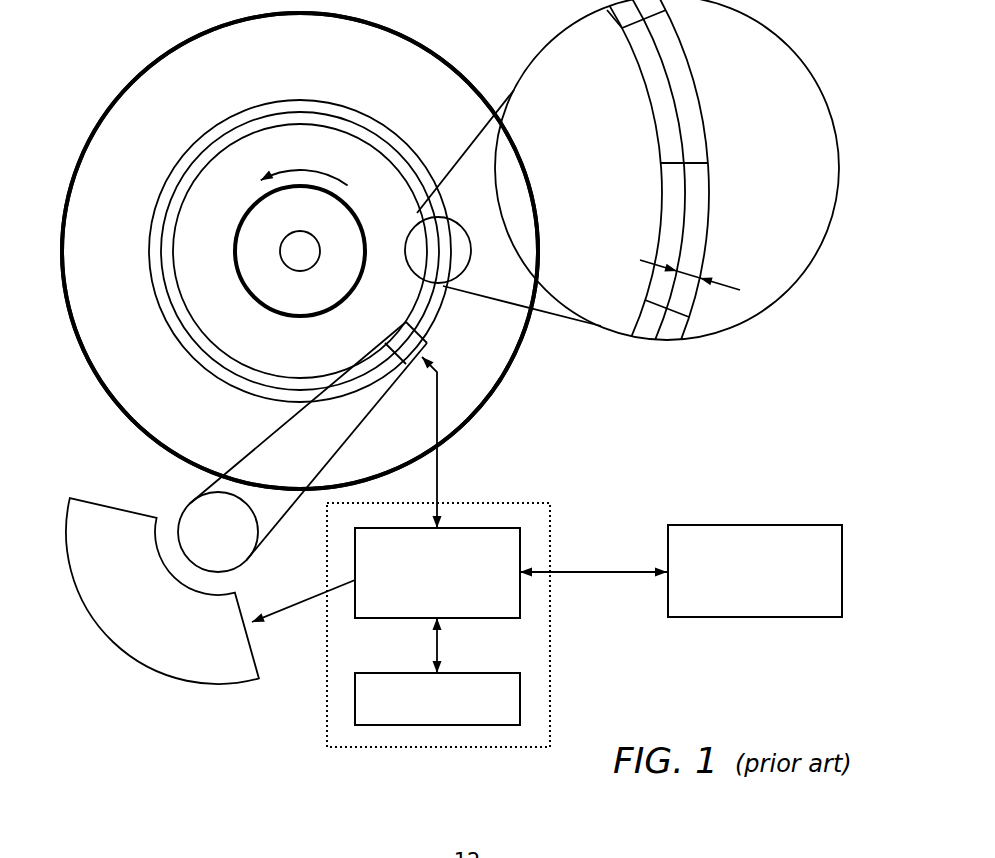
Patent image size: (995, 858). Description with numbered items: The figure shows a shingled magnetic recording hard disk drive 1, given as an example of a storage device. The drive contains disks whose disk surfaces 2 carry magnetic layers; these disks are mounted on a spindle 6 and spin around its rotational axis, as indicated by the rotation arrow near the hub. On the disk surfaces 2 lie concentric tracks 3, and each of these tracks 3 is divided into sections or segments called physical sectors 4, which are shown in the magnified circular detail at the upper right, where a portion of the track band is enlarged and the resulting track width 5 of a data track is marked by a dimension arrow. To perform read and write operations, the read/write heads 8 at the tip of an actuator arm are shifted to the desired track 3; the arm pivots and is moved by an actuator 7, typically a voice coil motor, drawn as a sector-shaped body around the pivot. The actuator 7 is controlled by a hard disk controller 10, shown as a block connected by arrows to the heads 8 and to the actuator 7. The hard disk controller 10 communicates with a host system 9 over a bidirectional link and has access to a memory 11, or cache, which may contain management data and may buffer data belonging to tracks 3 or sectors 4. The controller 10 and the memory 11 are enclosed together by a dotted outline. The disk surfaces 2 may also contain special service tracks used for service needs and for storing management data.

The SMR hard disk drive 1 is at (140, 60).
The disk surfaces 2 is at (415, 80).
The tracks 3 is at (166, 258).
The physical sectors 4 is at (697, 208).
The track width 5 is at (690, 275).
The spindle 6 is at (298, 252).
The actuator 7 is at (185, 656).
The read/write heads 8 is at (416, 345).
The host system 9 is at (738, 603).
The hard disk controller 10 is at (507, 547).
The memory 11 is at (512, 688).